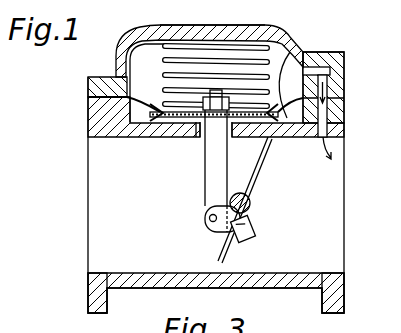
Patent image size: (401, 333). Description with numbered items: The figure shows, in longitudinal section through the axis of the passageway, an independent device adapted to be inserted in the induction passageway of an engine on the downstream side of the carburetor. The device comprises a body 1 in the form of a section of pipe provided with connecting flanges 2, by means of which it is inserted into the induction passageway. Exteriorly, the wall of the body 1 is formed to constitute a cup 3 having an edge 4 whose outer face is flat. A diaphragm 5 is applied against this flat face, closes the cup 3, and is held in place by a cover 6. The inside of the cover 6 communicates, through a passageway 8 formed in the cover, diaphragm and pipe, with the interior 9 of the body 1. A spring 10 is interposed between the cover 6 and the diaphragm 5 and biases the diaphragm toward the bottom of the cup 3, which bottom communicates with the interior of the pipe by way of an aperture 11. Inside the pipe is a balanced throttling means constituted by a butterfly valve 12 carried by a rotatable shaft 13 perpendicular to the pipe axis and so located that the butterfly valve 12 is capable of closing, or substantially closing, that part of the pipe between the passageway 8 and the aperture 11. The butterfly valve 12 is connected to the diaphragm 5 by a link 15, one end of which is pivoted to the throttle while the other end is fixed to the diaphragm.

The body 1 is at (161, 289).
The connecting flanges 2 is at (335, 326).
The cup 3 is at (133, 38).
The edge 4 is at (90, 100).
The diaphragm 5 is at (291, 50).
The cover 6 is at (255, 30).
The passageway 8 is at (345, 95).
The interior 9 is at (343, 178).
The spring 10 is at (177, 29).
The aperture 11 is at (195, 137).
The butterfly valve 12 is at (257, 168).
The rotatable shaft 13 is at (252, 212).
The link 15 is at (200, 187).